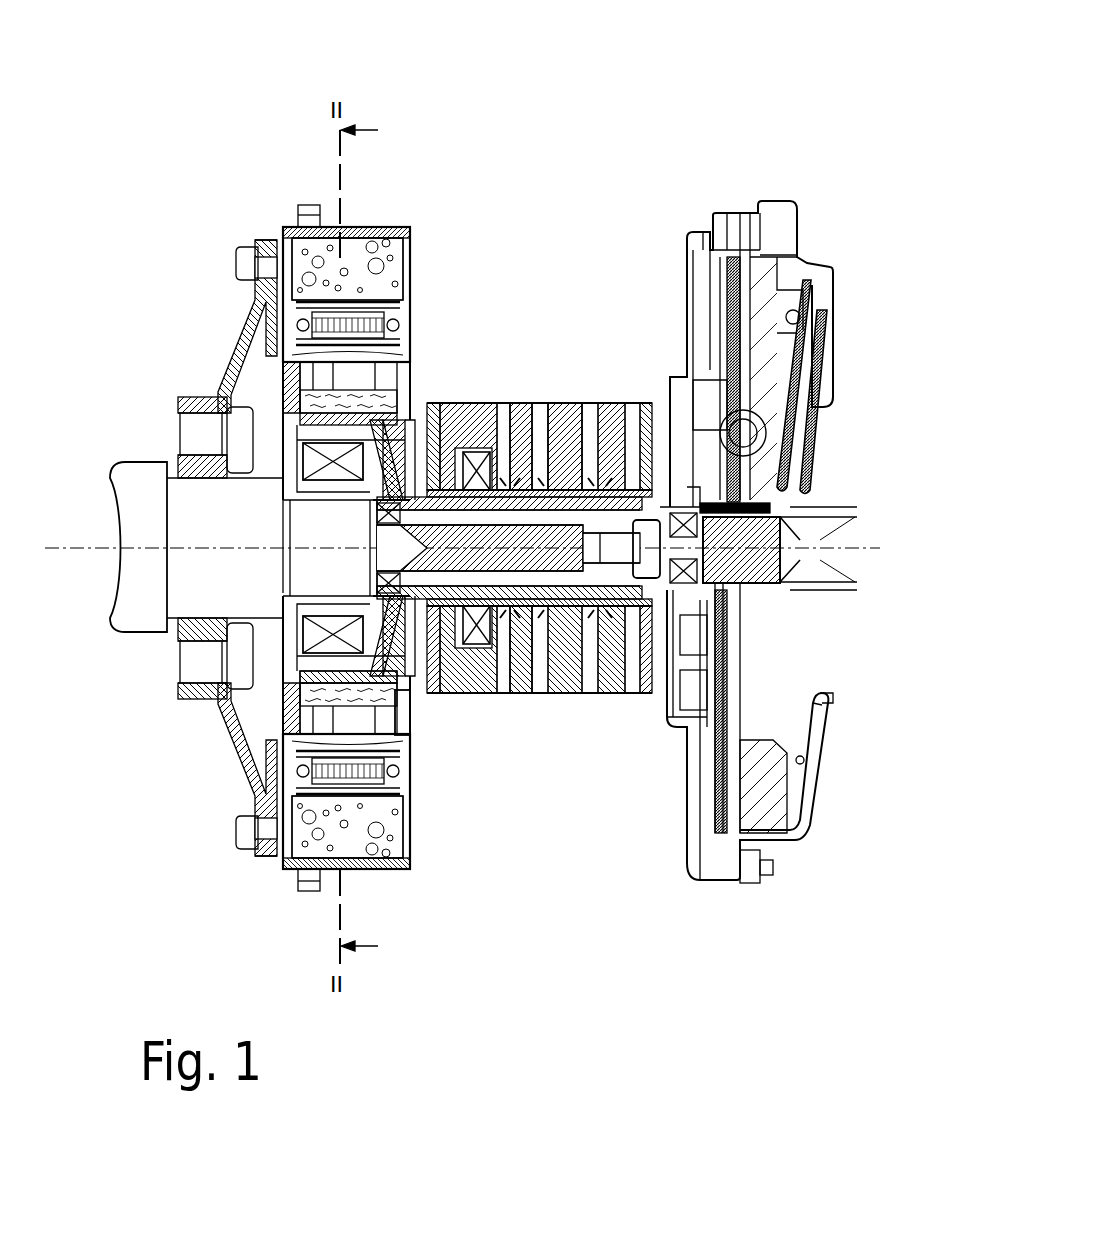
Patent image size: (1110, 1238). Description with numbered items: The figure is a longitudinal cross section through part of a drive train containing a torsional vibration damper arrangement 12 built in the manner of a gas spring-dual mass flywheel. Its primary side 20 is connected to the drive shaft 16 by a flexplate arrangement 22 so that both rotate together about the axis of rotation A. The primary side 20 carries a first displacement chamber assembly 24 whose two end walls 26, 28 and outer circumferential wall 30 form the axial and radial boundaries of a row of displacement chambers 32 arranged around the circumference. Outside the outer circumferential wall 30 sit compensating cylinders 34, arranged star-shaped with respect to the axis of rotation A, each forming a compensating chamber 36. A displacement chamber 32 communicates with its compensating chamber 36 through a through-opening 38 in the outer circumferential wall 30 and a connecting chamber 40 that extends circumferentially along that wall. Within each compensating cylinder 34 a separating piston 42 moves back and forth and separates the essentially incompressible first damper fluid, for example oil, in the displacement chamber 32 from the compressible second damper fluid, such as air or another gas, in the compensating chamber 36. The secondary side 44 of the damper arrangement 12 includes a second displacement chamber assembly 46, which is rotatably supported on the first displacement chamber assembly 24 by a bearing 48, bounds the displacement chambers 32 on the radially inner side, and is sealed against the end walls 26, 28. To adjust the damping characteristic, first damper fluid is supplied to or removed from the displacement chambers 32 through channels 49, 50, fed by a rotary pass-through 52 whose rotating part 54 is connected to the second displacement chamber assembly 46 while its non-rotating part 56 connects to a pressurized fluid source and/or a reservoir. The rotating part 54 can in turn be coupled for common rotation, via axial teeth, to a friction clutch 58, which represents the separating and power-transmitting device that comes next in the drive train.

The torsional vibration damper arrangement 12 is at (399, 457).
The drive shaft 16 is at (137, 620).
The primary side 20 is at (248, 702).
The flexplate arrangement 22 is at (240, 722).
The first displacement chamber assembly 24 is at (262, 390).
The end wall 26 is at (293, 387).
The end wall 28 is at (380, 380).
The outer circumferential wall 30 is at (388, 347).
The displacement chamber 32 is at (423, 392).
The compensating cylinder 34 is at (379, 530).
The compensating chamber 36 is at (352, 262).
The through-opening 38 is at (292, 330).
The connecting chamber 40 is at (405, 312).
The separating piston 42 is at (380, 770).
The secondary side 44 is at (407, 698).
The second displacement chamber assembly 46 is at (385, 722).
The bearing 48 is at (295, 460).
The channel 49 is at (562, 405).
The channel 50 is at (505, 600).
The rotary pass-through 52 is at (539, 443).
The rotating part 54 is at (530, 582).
The non-rotating part 56 is at (460, 472).
The friction clutch 58 is at (706, 185).
The axis of rotation A is at (80, 556).